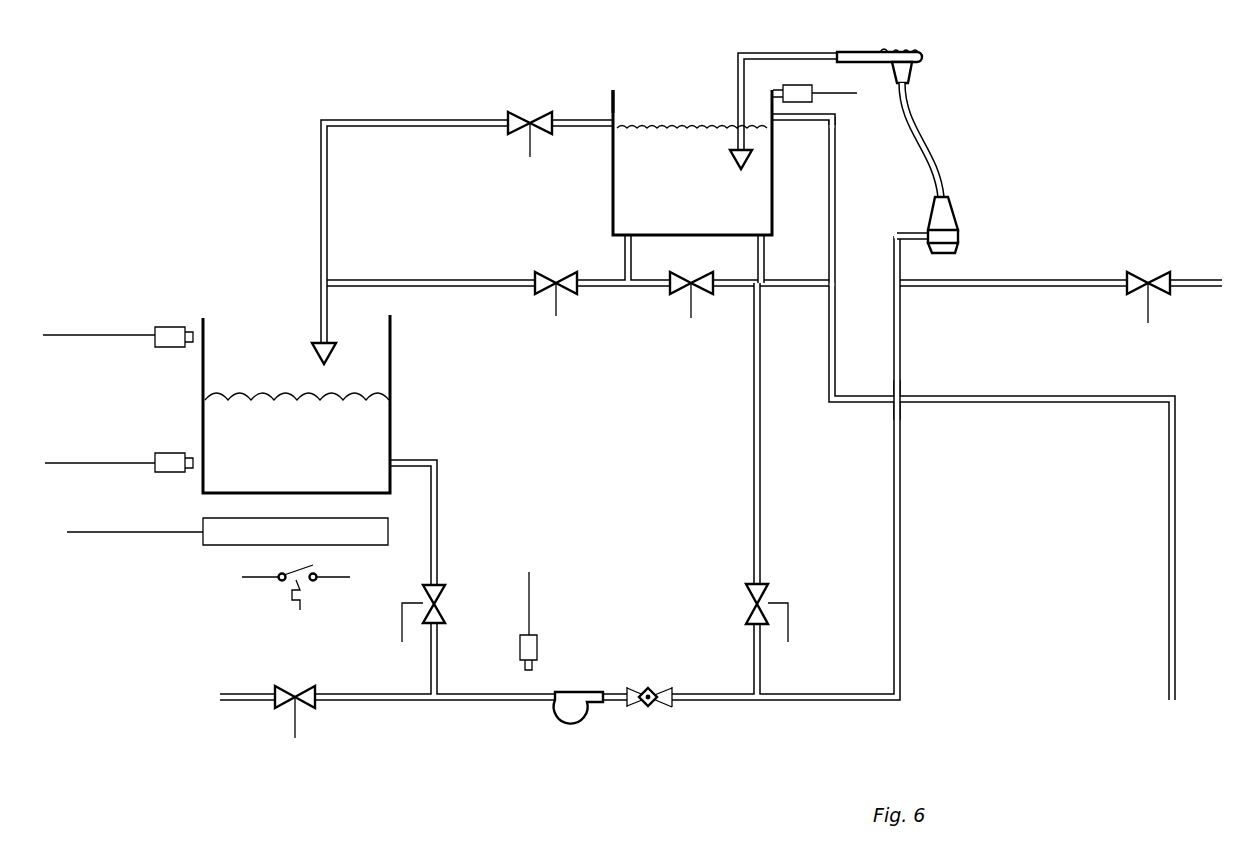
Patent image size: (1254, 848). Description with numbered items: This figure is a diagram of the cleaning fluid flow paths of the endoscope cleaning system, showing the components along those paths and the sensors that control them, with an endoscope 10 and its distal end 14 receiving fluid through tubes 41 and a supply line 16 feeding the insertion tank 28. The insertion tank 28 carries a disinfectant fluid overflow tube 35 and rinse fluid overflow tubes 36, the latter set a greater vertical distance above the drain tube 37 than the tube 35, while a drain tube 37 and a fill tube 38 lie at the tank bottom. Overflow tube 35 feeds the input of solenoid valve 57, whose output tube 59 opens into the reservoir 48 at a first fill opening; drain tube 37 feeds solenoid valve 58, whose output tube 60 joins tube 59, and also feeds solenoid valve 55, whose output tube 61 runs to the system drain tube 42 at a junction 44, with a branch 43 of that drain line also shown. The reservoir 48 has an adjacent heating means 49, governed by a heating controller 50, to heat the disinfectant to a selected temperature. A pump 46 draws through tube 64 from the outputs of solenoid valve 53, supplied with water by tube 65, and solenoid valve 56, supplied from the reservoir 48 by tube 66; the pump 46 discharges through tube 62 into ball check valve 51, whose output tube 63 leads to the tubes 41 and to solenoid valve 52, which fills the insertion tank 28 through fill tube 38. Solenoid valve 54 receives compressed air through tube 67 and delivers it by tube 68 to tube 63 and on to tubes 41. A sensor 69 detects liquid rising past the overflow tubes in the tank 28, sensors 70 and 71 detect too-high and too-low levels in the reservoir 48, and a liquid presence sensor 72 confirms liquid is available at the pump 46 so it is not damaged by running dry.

The endoscope 10 is at (820, 54).
The distal end of endoscope 14 is at (962, 233).
The fill conduit 16 is at (737, 107).
The insertion tank 28 is at (612, 190).
The disinfectant fluid overflow tube 35 is at (612, 121).
The rinse fluid overflow tubes 36 is at (797, 122).
The drain tube 37 is at (632, 258).
The fill tube 38 is at (764, 258).
The tubes 41 is at (922, 234).
The drain tube 42 is at (836, 258).
The conduit branch 43 is at (812, 228).
The junction 44 is at (836, 290).
The pump 46 is at (554, 722).
The reservoir 48 is at (392, 425).
The heating means 49 is at (215, 548).
The heating controller 50 is at (276, 585).
The ball check valve 51 is at (658, 684).
The electrically controlled solenoid valve 52 is at (743, 612).
The electrically controlled solenoid valve 53 is at (304, 686).
The electrically controlled solenoid valve 54 is at (1143, 272).
The electrically controlled solenoid valve 55 is at (697, 273).
The electrically controlled solenoid valve 56 is at (446, 596).
The electrically controlled solenoid valve 57 is at (527, 112).
The electrically controlled solenoid valve 58 is at (555, 272).
The tube 59 is at (329, 190).
The tube 60 is at (468, 278).
The tube 61 is at (793, 287).
The tube 62 is at (617, 690).
The tube 63 is at (904, 266).
The tube 64 is at (414, 690).
The tube 65 is at (250, 689).
The tube 66 is at (441, 490).
The tube 67 is at (1200, 279).
The tube 68 is at (1066, 278).
The sensor 69 is at (813, 88).
The sensor 70 is at (175, 326).
The sensor 71 is at (166, 455).
The liquid presence sensor 72 is at (540, 650).